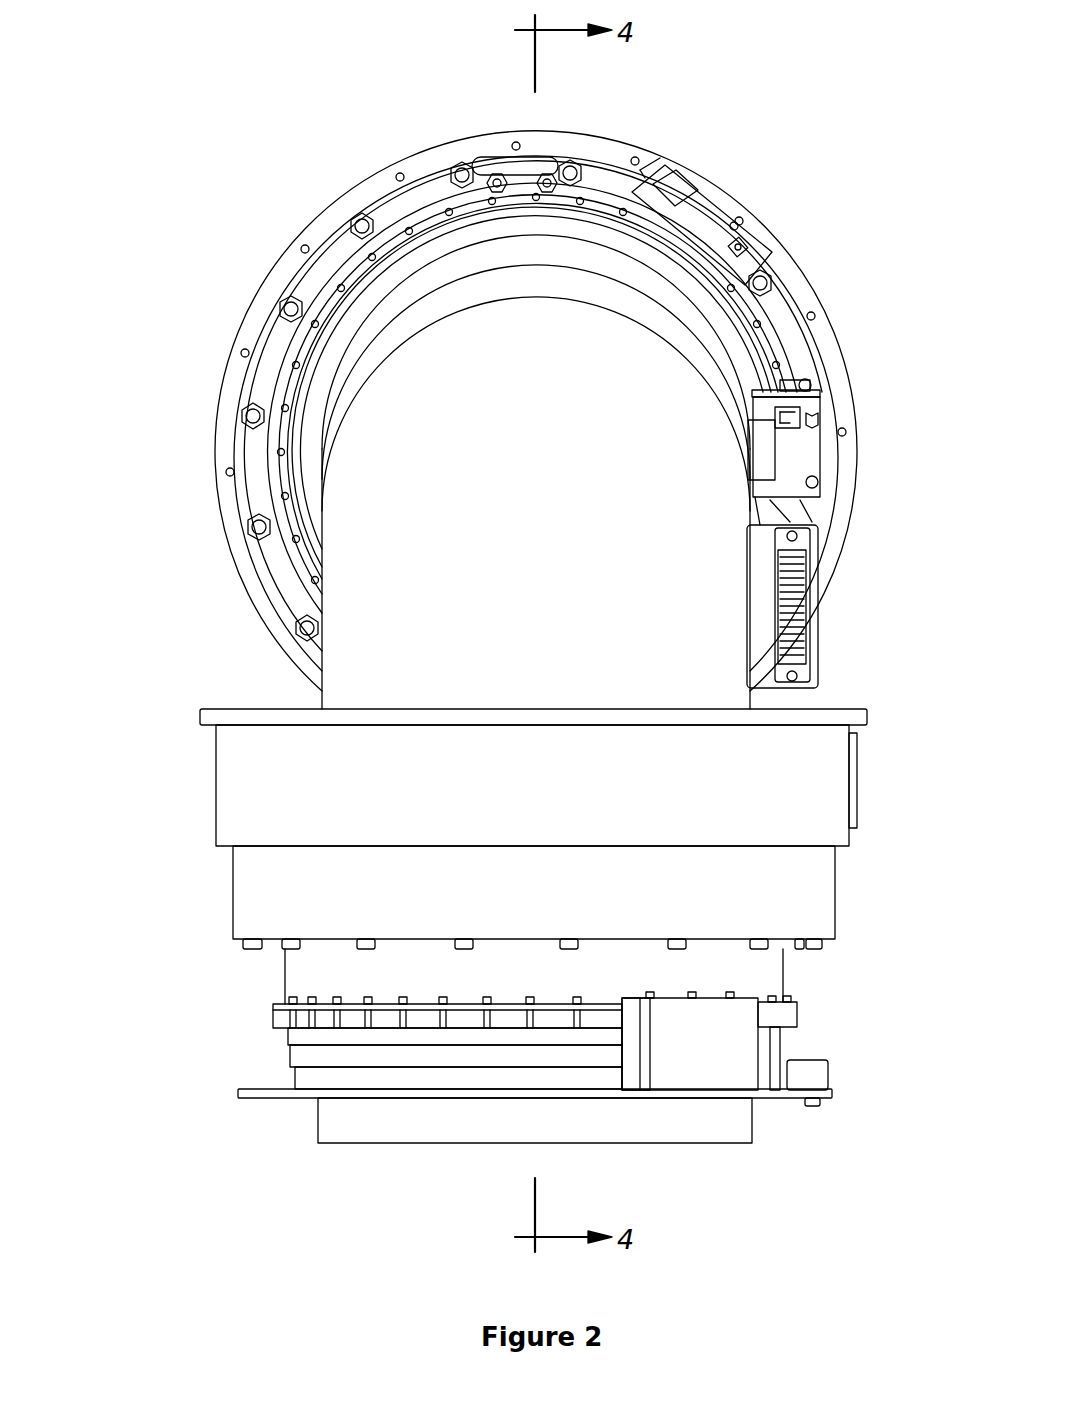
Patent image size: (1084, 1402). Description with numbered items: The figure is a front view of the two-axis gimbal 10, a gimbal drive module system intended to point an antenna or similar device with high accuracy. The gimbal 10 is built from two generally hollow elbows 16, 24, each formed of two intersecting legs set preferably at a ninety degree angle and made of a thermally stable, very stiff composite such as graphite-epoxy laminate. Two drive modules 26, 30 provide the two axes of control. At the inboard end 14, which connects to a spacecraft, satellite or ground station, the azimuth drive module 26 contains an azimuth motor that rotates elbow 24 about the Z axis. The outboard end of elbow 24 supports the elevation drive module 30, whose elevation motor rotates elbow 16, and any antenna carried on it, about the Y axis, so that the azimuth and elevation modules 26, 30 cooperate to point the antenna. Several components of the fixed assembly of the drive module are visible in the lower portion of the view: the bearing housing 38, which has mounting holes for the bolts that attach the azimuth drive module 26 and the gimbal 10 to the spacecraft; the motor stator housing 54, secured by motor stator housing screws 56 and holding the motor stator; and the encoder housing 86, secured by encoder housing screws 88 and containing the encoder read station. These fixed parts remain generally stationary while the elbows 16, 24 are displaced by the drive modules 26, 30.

The two-axis gimbal 10 is at (266, 134).
The elevation drive module 30 is at (172, 300).
The elbow 16 is at (802, 282).
The elbow 24 is at (360, 555).
The azimuth drive module 26 is at (172, 926).
The encoder housing 86 is at (818, 880).
The encoder housing screws 88 is at (823, 945).
The motor stator housing 54 is at (297, 962).
The motor stator housing screws 56 is at (278, 1002).
The bearing housing 38 is at (283, 1095).
The inboard end 14 is at (327, 1135).